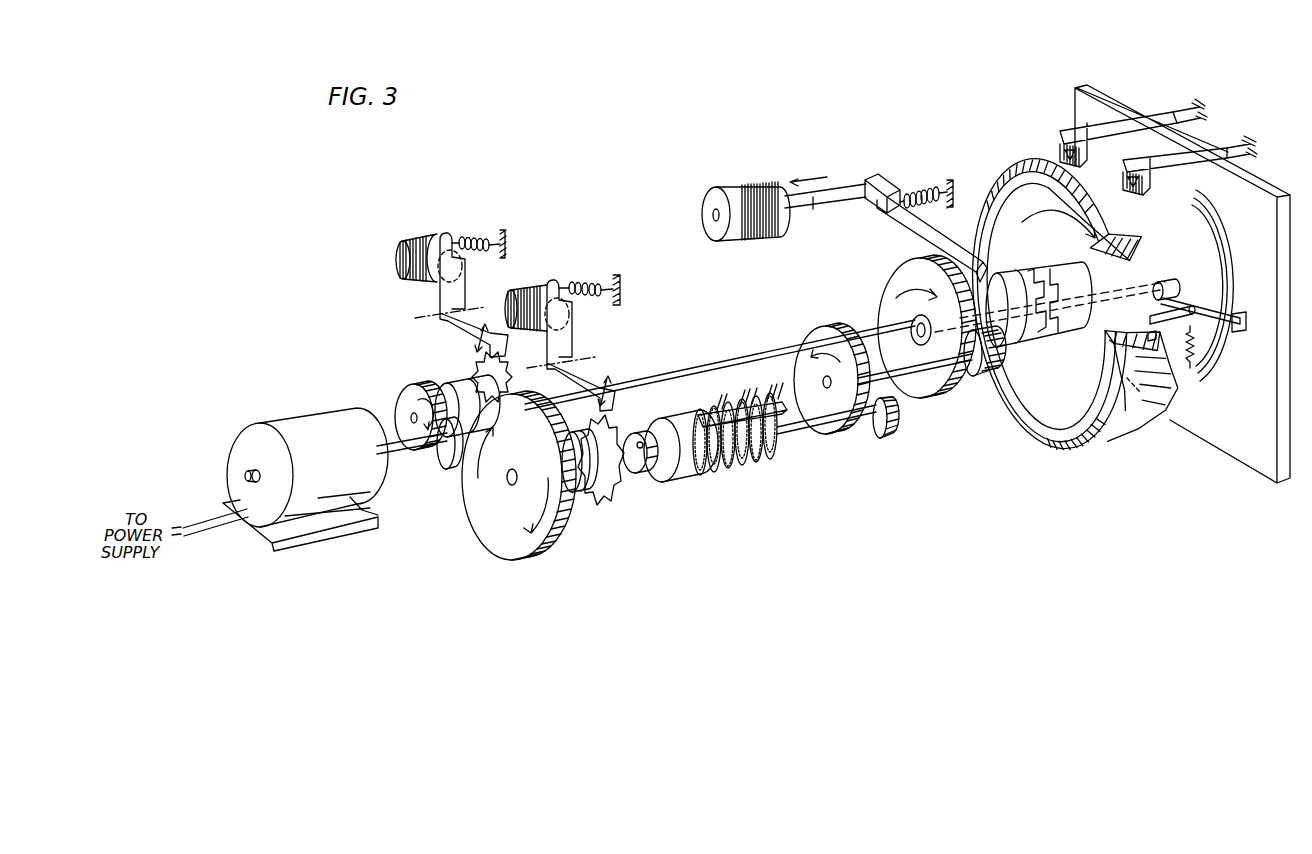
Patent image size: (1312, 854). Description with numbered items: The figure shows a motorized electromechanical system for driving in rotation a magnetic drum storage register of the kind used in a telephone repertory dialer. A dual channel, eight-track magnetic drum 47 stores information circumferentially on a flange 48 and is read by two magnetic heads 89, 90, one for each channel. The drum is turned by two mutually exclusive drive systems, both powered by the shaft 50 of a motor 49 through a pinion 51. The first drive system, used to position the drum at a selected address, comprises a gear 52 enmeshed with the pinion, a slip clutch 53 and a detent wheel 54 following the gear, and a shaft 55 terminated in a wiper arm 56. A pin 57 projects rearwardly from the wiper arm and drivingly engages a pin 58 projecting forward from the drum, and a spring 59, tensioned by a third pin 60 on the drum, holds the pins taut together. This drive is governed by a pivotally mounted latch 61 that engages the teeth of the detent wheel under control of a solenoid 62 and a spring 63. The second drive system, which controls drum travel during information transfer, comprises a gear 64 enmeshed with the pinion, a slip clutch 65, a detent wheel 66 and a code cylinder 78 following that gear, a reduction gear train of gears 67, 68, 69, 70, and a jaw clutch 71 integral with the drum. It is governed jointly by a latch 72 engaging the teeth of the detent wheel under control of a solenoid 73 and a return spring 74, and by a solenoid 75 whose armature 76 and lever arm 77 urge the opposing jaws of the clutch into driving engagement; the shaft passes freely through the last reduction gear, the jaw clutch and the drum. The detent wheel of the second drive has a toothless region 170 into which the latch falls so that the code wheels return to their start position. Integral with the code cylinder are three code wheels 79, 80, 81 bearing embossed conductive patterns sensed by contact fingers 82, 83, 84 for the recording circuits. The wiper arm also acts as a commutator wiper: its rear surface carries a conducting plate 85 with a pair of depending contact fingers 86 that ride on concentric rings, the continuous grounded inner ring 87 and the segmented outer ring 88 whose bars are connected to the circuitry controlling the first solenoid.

The magnetic drum 47 is at (1054, 248).
The flange 48 is at (1018, 168).
The motor 49 is at (302, 425).
The shaft 50 is at (404, 455).
The pinion 51 is at (452, 462).
The gear 52 is at (402, 392).
The slip clutch 53 is at (448, 380).
The detent wheel 54 is at (484, 360).
The shaft 55 is at (698, 366).
The wiper arm 56 is at (1178, 292).
The pin 57 is at (1148, 318).
The pin 58 is at (1146, 336).
The spring 59 is at (1196, 350).
The third pin 60 is at (1127, 378).
The latch 61 is at (450, 320).
The solenoid 62 is at (424, 238).
The spring 63 is at (462, 240).
The gear 64 is at (526, 550).
The slip clutch 65 is at (586, 494).
The detent wheel 66 is at (610, 432).
The gear 67 is at (890, 430).
The gear 68 is at (832, 434).
The gear 69 is at (976, 376).
The gear 70 is at (888, 280).
The jaw clutch 71 is at (1060, 332).
The latch 72 is at (570, 345).
The solenoid 73 is at (531, 293).
The spring 74 is at (578, 282).
The solenoid 75 is at (756, 232).
The armature 76 is at (834, 203).
The lever arm 77 is at (905, 222).
The code cylinder 78 is at (665, 482).
The code wheel 79 is at (698, 475).
The code wheel 80 is at (716, 472).
The code wheel 81 is at (757, 462).
The contact finger 82 is at (728, 468).
The contact finger 83 is at (743, 465).
The contact finger 84 is at (773, 458).
The conducting plate 85 is at (1240, 310).
The contact fingers 86 is at (1240, 312).
The inner ring 87 is at (1198, 208).
The outer ring 88 is at (1208, 220).
The magnetic head 89 is at (1058, 138).
The magnetic head 90 is at (1122, 167).
The toothless region 170 is at (636, 475).